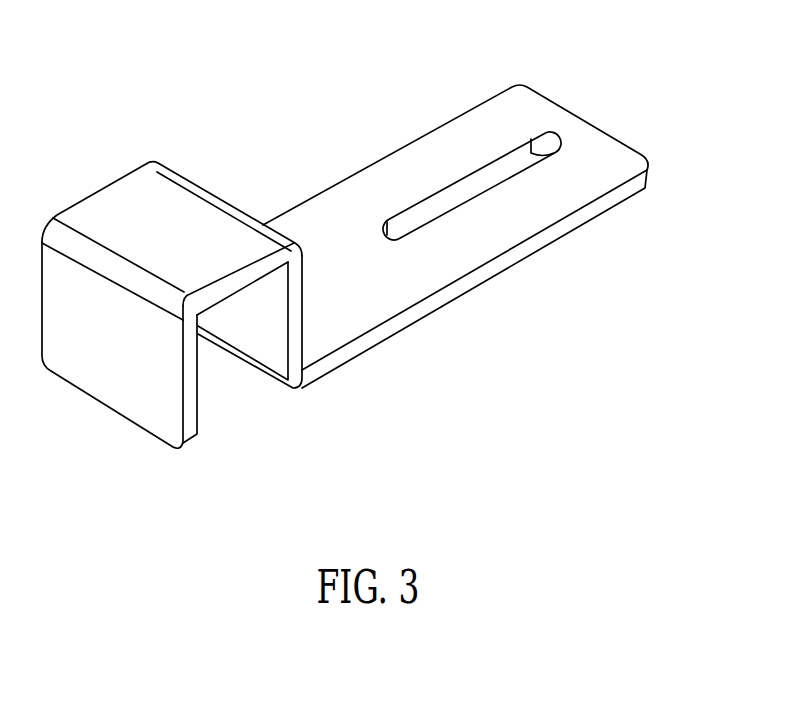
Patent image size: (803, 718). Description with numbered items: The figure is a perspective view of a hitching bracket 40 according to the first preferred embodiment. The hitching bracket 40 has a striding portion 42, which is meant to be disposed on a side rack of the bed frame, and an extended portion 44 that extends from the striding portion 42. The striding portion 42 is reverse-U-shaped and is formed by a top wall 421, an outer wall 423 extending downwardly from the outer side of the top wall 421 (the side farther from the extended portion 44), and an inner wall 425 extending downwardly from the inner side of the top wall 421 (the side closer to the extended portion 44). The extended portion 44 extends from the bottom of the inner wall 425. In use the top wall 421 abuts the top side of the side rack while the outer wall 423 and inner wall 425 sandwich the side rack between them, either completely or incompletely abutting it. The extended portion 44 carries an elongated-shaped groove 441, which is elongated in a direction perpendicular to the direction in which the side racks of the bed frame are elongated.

The hitching bracket 40 is at (157, 108).
The striding portion 42 is at (119, 197).
The top wall 421 is at (239, 283).
The outer wall 423 is at (190, 380).
The inner wall 425 is at (297, 315).
The extended portion 44 is at (355, 202).
The elongated-shaped groove 441 is at (542, 157).